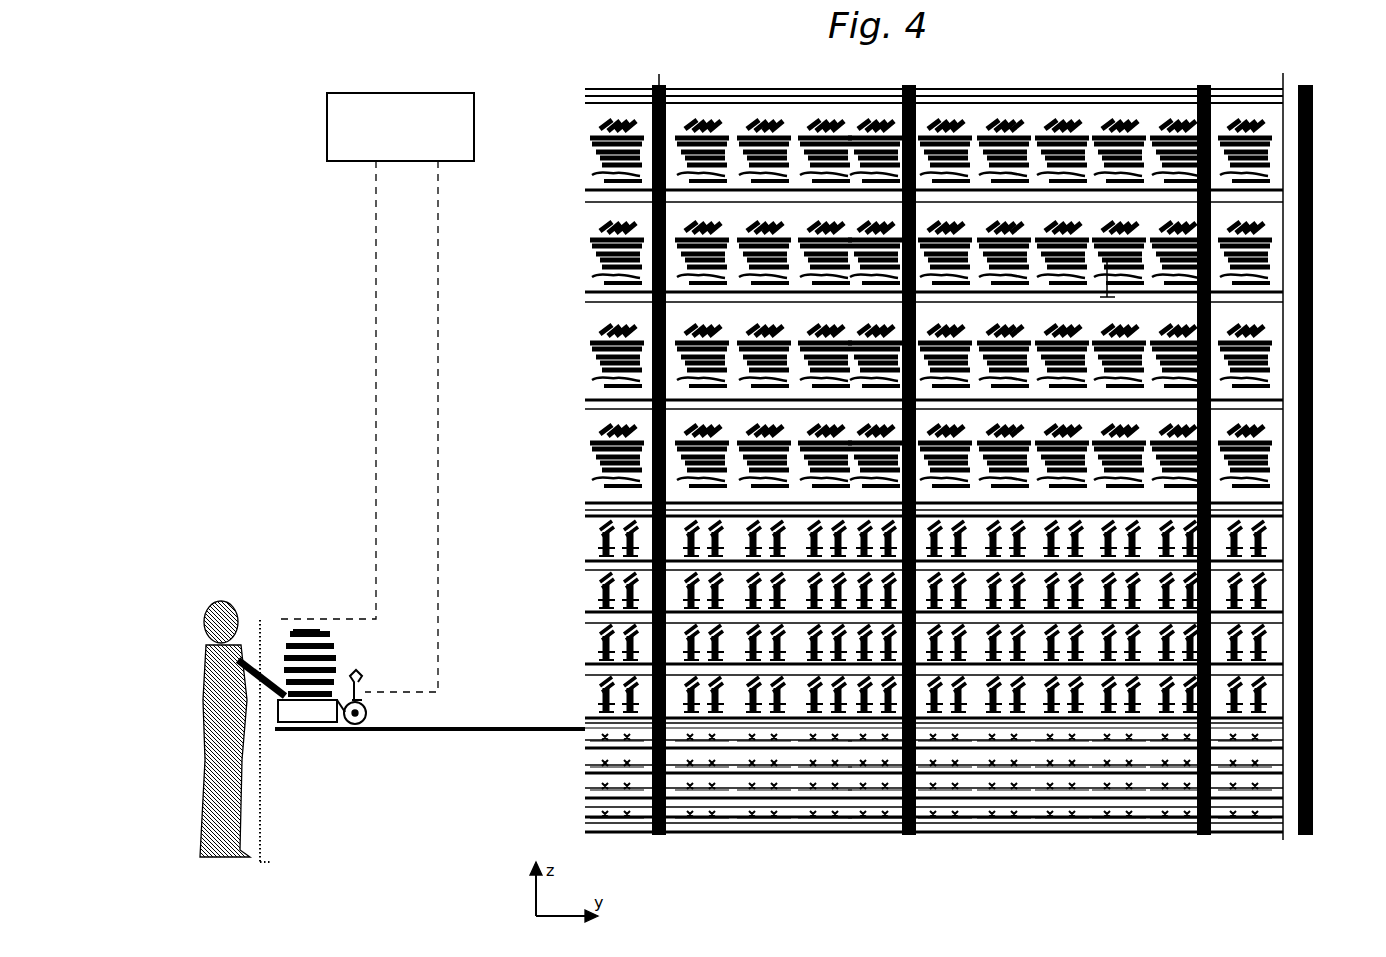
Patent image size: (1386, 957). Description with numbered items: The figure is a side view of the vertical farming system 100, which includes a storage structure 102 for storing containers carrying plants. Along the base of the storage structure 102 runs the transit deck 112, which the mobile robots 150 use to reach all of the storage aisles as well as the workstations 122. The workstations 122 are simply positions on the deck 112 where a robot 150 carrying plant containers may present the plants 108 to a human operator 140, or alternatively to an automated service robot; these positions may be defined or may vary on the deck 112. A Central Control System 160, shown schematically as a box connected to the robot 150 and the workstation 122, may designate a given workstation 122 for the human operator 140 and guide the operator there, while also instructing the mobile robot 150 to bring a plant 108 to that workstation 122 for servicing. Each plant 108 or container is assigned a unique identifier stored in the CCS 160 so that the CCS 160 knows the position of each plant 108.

The vertical farming system 100 is at (258, 118).
The storage structure 102 is at (587, 410).
The plant 108 is at (322, 708).
The transit deck 112 is at (492, 728).
The workstation 122 is at (317, 775).
The human operator 140 is at (215, 603).
The mobile robot 150 is at (357, 718).
The Central Control System (CCS) 160 is at (376, 392).